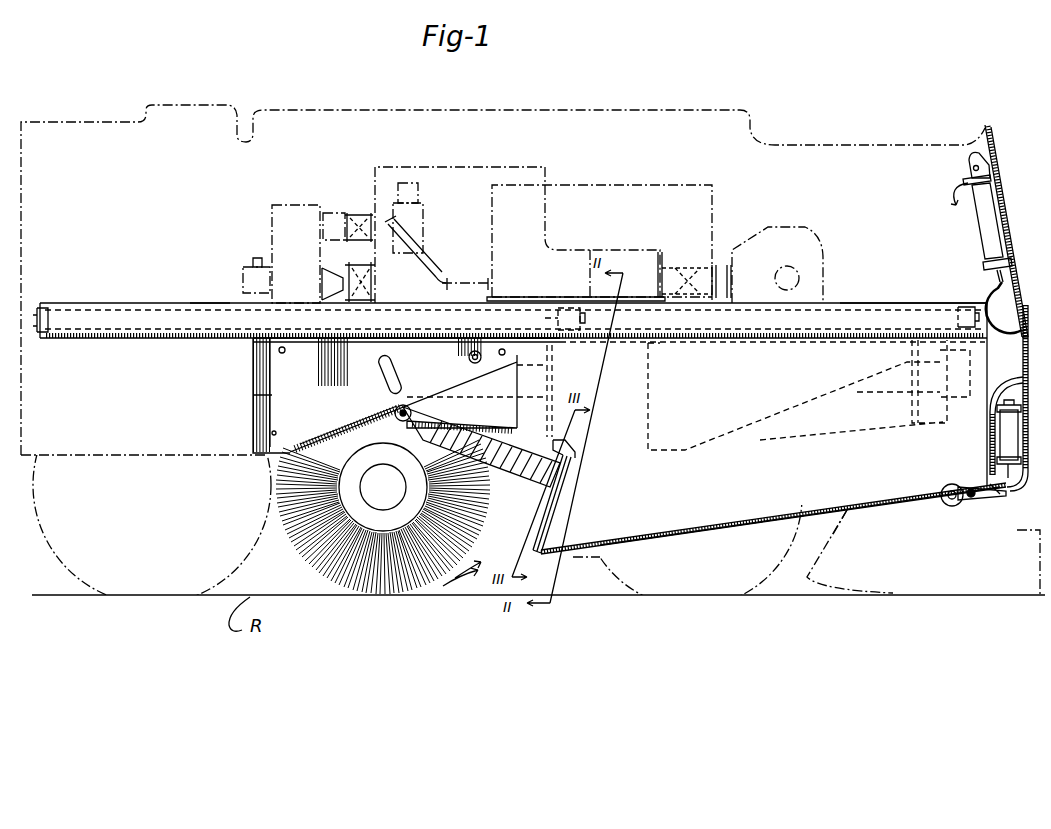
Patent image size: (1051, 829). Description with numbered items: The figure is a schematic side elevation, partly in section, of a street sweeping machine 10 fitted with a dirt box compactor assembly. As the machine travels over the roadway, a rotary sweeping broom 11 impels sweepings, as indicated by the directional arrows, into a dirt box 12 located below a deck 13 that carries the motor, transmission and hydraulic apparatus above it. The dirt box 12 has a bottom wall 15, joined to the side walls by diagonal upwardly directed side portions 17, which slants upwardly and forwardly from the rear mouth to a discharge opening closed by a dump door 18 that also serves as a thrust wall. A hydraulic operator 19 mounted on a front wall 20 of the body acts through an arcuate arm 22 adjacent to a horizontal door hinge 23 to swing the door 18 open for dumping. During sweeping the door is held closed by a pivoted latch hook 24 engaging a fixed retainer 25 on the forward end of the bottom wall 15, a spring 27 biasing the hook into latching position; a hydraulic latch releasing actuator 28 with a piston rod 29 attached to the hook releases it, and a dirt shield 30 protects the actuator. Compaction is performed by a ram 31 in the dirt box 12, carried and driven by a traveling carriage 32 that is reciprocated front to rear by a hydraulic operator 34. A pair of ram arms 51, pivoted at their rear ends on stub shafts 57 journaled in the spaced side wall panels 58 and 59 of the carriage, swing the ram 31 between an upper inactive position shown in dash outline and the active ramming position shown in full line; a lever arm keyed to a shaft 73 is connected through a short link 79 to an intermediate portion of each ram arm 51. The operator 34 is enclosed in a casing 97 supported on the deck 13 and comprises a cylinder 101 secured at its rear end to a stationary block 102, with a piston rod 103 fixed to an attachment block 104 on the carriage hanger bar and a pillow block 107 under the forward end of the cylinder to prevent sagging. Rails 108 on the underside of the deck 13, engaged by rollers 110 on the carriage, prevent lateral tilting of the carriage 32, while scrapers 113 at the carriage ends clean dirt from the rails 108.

The street sweeping machine 10 is at (812, 144).
The rotary sweeping broom 11 is at (366, 575).
The dirt box 12 is at (737, 533).
The deck 13 is at (248, 342).
The bottom wall 15 is at (694, 532).
The diagonal upwardly directed side portions 17 is at (832, 507).
The dump door 18 is at (1000, 452).
The hydraulic operator 19 is at (985, 236).
The front wall 20 is at (1000, 198).
The arcuate arm 22 is at (992, 300).
The door hinge 23 is at (1030, 300).
The latch hook 24 is at (969, 503).
The retainer 25 is at (948, 505).
The spring 27 is at (986, 500).
The latch releasing actuator 28 is at (406, 365).
The piston rod 29 is at (1007, 492).
The dirt shield 30 is at (994, 392).
The ram 31 is at (566, 525).
The traveling carriage 32 is at (760, 440).
The hydraulic operator 34 is at (228, 300).
The ram arms 51 is at (523, 470).
The stub shafts 57 is at (276, 432).
The side wall panel 58 is at (280, 386).
The side wall panel 59 is at (479, 391).
The shaft 73 is at (468, 360).
The link 79 is at (413, 413).
The casing 97 is at (158, 315).
The cylinder 101 is at (216, 292).
The stationary block 102 is at (38, 302).
The piston rod 103 is at (880, 308).
The attachment block 104 is at (958, 318).
The pillow block 107 is at (531, 344).
The rails 108 is at (646, 342).
The rollers 110 is at (284, 344).
The scrapers 113 is at (246, 346).